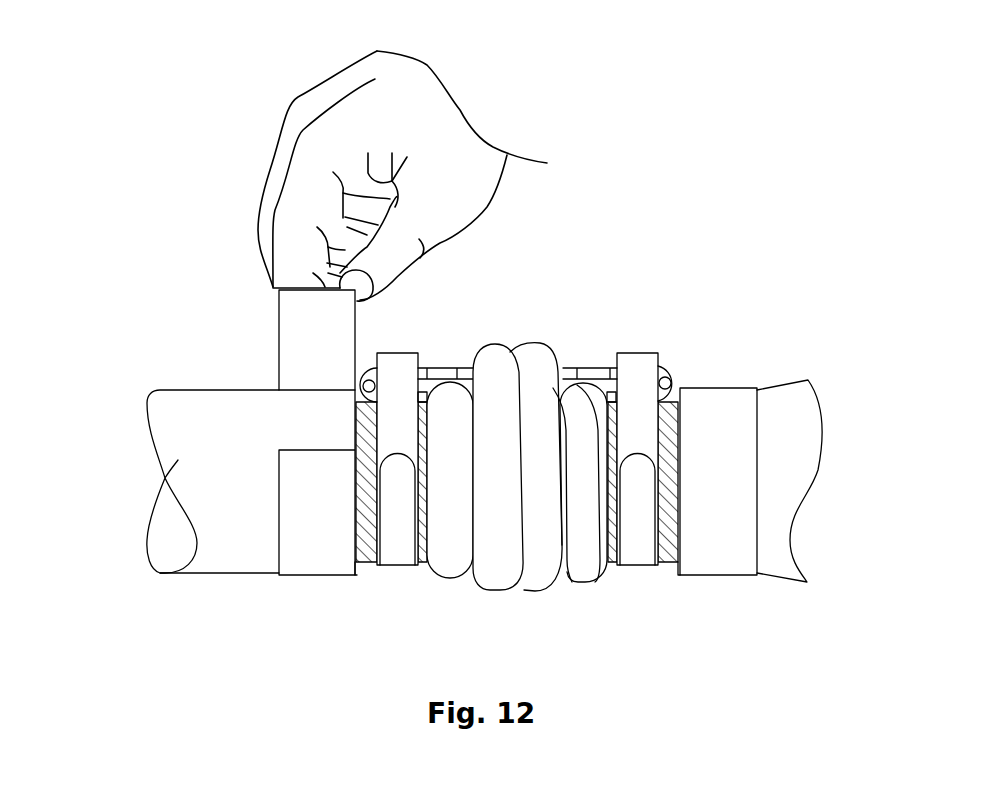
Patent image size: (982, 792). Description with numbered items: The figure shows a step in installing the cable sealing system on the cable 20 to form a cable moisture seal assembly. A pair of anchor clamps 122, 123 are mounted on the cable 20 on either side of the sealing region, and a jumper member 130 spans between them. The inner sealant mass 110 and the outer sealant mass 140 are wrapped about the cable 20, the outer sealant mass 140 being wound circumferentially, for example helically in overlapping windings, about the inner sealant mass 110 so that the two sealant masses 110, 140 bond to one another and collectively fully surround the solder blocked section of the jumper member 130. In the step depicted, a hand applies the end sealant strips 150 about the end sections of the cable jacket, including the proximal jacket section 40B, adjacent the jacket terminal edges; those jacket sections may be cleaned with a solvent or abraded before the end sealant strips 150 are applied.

The cable 20 is at (138, 298).
The proximal jacket section 40B is at (218, 593).
The inner sealant mass 110 is at (583, 577).
The anchor clamp 122 is at (398, 360).
The anchor clamp 123 is at (637, 360).
The jumper member 130 is at (448, 360).
The outer sealant mass 140 is at (540, 593).
The end sealant mass 150 is at (278, 328).